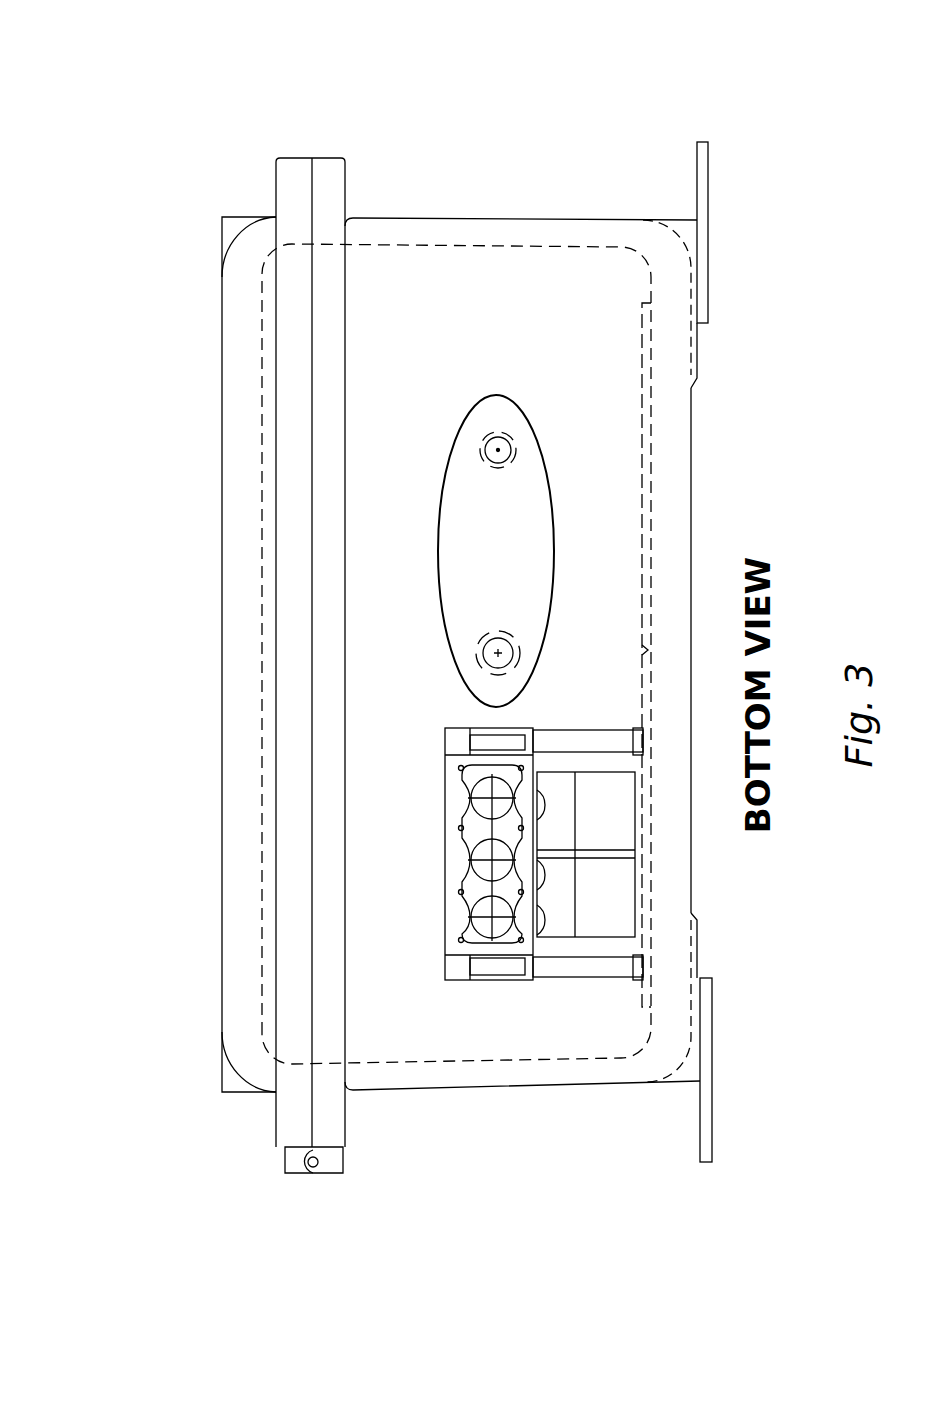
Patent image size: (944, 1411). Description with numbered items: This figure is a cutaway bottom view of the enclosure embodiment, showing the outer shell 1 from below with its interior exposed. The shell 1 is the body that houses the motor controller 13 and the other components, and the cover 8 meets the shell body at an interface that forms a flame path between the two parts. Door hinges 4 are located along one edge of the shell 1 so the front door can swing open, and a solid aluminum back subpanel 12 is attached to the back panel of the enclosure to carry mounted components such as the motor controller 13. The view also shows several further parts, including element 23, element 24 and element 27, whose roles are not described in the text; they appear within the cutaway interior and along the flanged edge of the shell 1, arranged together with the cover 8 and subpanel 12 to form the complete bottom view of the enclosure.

The outer shell 1 is at (430, 1092).
The door hinges 4 is at (285, 1173).
The cover 8 is at (222, 874).
The back subpanel 12 is at (640, 300).
The motor controller 13 is at (308, 157).
The engine 23 is at (562, 977).
The oval mounting plate 24 is at (488, 393).
The flange 27 is at (699, 1118).